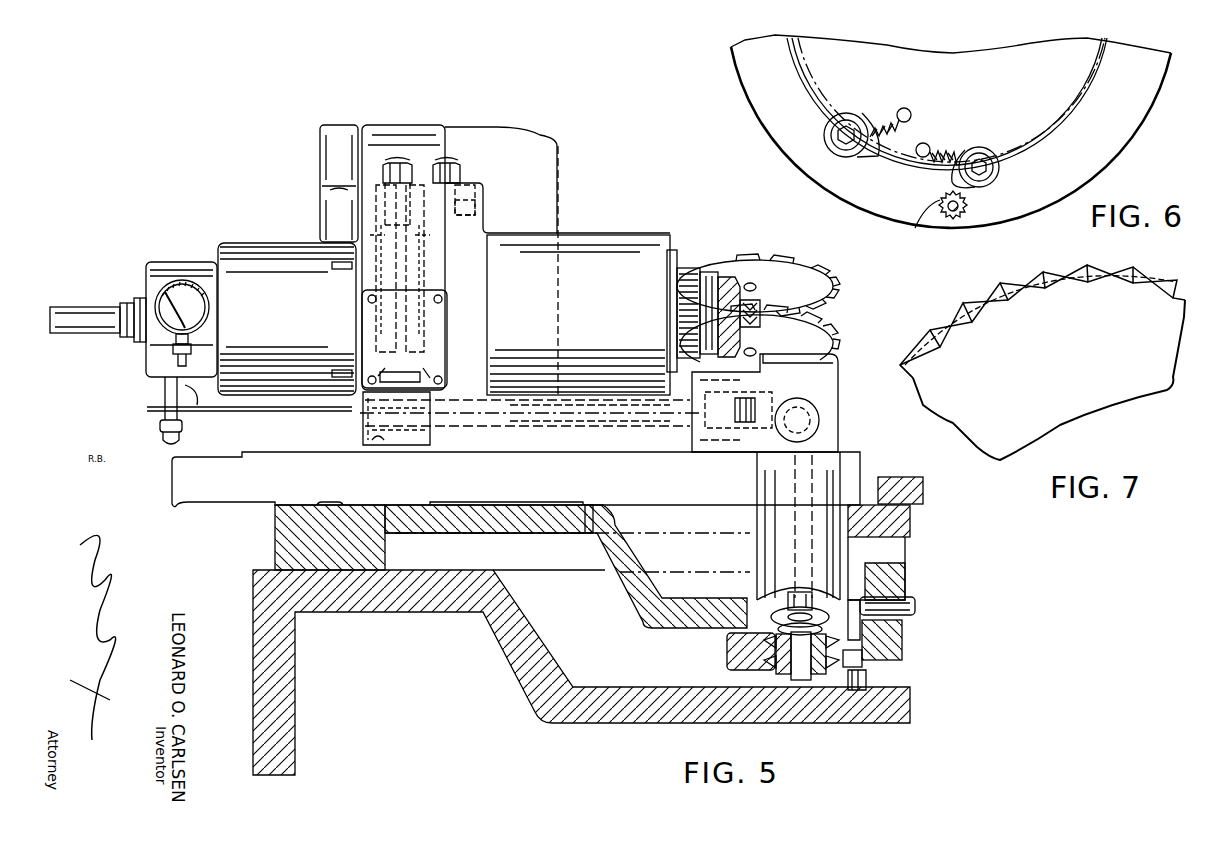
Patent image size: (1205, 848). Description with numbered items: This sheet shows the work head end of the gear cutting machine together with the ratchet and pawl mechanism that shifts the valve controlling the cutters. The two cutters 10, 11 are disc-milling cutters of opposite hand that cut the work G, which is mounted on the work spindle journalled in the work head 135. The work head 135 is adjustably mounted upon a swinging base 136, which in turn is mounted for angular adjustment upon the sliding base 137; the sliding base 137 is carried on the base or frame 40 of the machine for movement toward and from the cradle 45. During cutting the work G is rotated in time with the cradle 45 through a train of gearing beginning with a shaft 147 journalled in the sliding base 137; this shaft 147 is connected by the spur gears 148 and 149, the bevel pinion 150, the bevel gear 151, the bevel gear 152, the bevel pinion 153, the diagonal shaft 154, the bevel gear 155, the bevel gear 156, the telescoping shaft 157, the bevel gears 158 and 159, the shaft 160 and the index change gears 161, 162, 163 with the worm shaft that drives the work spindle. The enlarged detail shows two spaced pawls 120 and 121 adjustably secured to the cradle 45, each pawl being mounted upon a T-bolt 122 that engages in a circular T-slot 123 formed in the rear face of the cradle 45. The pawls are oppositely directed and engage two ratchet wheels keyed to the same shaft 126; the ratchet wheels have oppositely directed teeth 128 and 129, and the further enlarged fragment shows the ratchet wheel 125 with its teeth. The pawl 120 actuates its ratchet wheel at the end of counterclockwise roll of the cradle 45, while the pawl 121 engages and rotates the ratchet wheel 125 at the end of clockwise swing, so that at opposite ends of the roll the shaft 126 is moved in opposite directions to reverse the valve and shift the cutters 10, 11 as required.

In FIG. 5, the cutter 10 is at (766, 268).
In FIG. 5, the cutter 11 is at (792, 346).
In FIG. 5, the base or frame 40 is at (572, 708).
In FIG. 6, the cradle 45 is at (1036, 196).
In FIG. 5, the work G is at (727, 278).
In FIG. 6, the pawl 120 is at (867, 146).
In FIG. 6, the pawl 121 is at (958, 184).
In FIG. 6, the T-bolt 122 is at (856, 128).
In FIG. 6, the circular T-slot 123 is at (1044, 142).
In FIG. 6, the ratchet wheel 125 is at (968, 208).
In FIG. 7, the ratchet wheel 125 is at (1118, 392).
In FIG. 6, the shaft 126 is at (919, 223).
In FIG. 7, the teeth 128 is at (905, 371).
In FIG. 7, the teeth 129 is at (1002, 294).
In FIG. 5, the work head 135 is at (548, 213).
In FIG. 5, the swinging base 136 is at (252, 496).
In FIG. 5, the sliding base 137 is at (284, 556).
In FIG. 5, the shaft 147 is at (905, 603).
In FIG. 5, the spur gear 148 is at (860, 582).
In FIG. 5, the spur gear 149 is at (868, 668).
In FIG. 5, the bevel pinion 150 is at (866, 680).
In FIG. 5, the bevel gear 151 is at (776, 642).
In FIG. 5, the bevel gear 152 is at (776, 626).
In FIG. 5, the bevel pinion 153 is at (780, 612).
In FIG. 5, the diagonal shaft 154 is at (815, 480).
In FIG. 5, the bevel gear 155 is at (820, 426).
In FIG. 5, the bevel gear 156 is at (780, 401).
In FIG. 5, the telescoping shaft 157 is at (487, 408).
In FIG. 5, the bevel gear 158 is at (380, 440).
In FIG. 5, the bevel gear 159 is at (430, 374).
In FIG. 5, the shaft 160 is at (400, 282).
In FIG. 5, the index change gear 161 is at (378, 190).
In FIG. 5, the index change gear 162 is at (468, 190).
In FIG. 5, the index change gear 163 is at (462, 215).